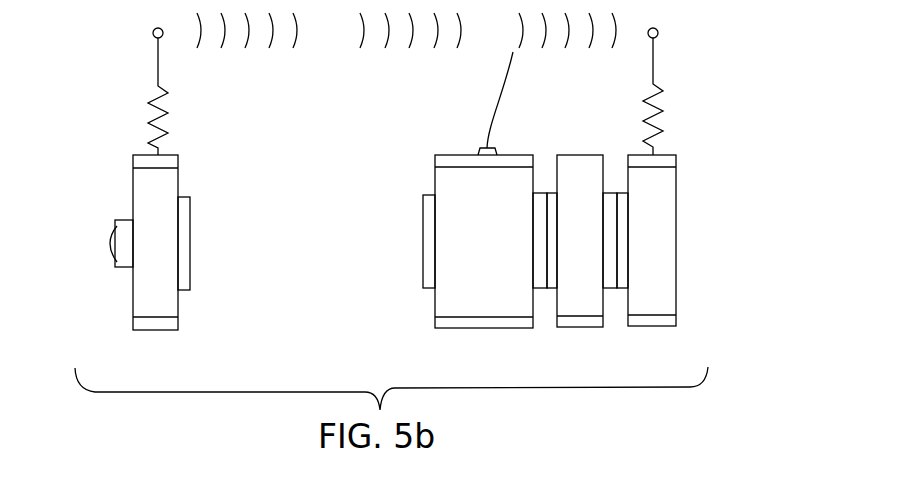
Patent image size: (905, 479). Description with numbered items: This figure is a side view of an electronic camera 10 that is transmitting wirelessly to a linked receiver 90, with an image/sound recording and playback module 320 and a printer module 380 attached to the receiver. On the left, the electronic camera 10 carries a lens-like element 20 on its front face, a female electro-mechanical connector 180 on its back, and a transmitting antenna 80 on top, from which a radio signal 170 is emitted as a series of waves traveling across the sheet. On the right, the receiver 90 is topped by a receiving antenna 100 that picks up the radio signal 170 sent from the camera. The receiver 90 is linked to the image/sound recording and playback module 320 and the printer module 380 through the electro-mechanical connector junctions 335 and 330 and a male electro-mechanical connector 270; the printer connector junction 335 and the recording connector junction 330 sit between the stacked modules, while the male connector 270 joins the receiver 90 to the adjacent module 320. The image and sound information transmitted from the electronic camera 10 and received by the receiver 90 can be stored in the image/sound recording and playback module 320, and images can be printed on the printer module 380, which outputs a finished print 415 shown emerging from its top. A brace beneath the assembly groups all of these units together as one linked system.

The electronic camera 10 is at (178, 330).
The lens 20 is at (118, 268).
The antenna (transmitting) 80 is at (162, 92).
The receiver 90 is at (677, 323).
The antenna (receiving) 100 is at (653, 62).
The radio signal 170 is at (372, 48).
The electro-mechanical connector (female) 180 is at (190, 197).
The electro-mechanical connector (male) 270 is at (623, 213).
The image/sound recording and playback module 320 is at (580, 328).
The image/sound recording electro-mechanical connector (male/female junction) 330 is at (552, 193).
The printer electro-mechanical connector (male/female junction) 335 is at (423, 195).
The printer module 380 is at (487, 328).
The finished print 415 is at (510, 90).